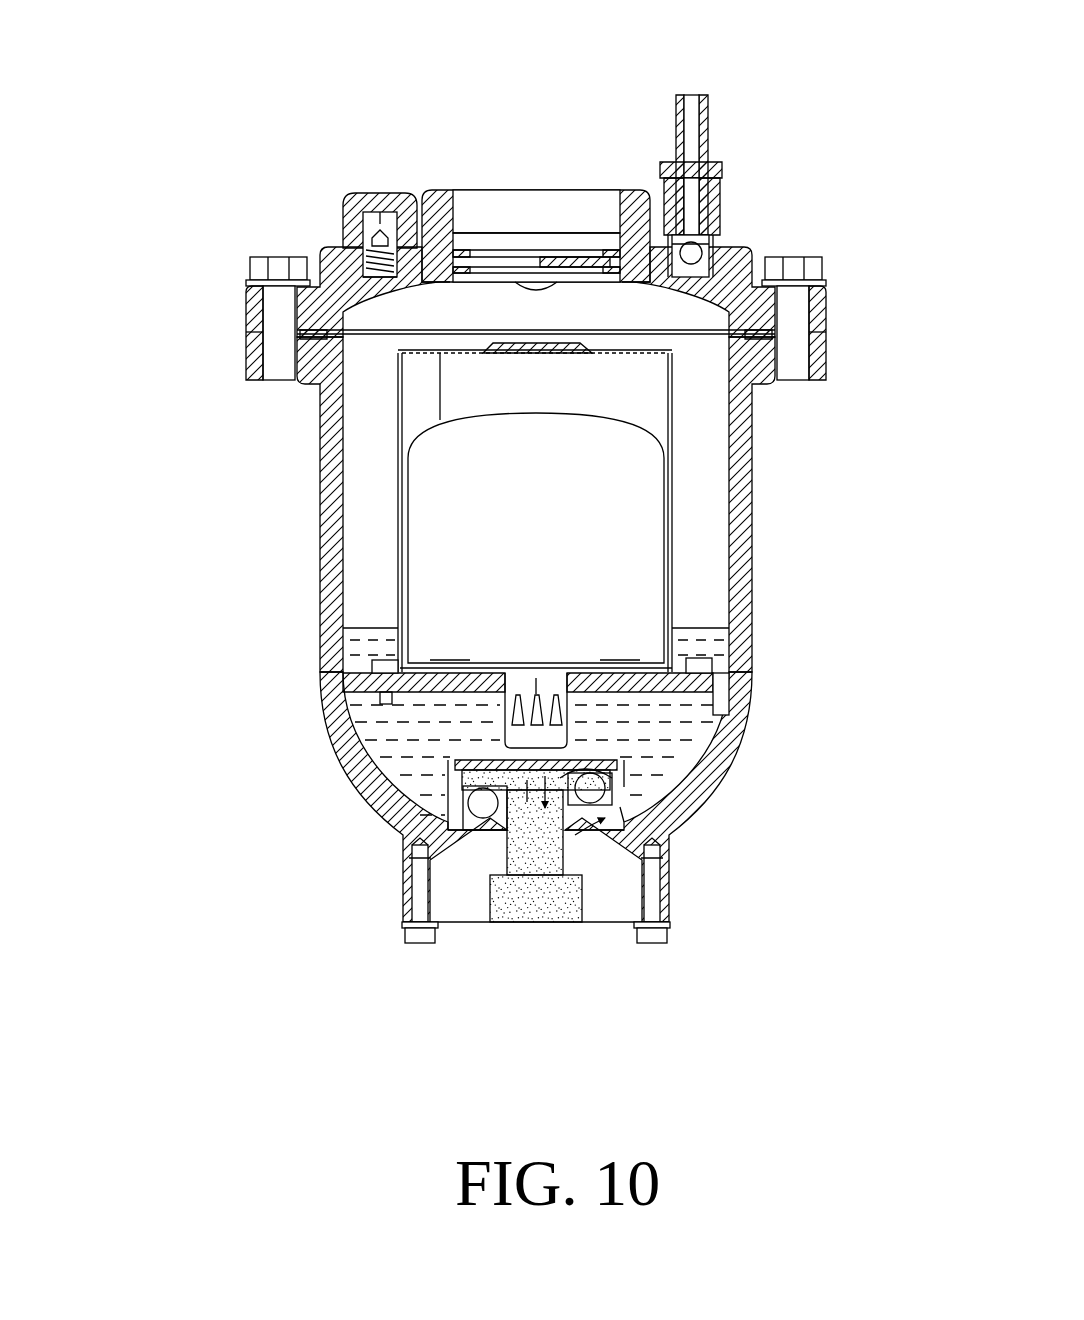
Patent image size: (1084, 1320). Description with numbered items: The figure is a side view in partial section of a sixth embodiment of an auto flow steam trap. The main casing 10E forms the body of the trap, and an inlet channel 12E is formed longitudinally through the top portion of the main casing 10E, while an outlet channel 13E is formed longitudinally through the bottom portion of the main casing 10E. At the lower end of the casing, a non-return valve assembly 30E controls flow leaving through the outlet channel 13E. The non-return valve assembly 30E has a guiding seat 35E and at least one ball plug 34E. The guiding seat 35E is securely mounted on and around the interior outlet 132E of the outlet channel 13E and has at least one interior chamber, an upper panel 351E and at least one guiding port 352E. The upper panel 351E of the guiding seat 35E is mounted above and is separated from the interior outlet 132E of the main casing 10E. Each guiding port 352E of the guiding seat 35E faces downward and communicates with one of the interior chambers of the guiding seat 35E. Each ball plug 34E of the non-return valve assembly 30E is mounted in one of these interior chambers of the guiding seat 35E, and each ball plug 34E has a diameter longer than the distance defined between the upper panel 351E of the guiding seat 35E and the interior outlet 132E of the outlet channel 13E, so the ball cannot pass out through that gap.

The main casing 10E is at (333, 494).
The inlet channel 12E is at (455, 227).
The outlet channel 13E is at (563, 872).
The non-return valve assembly 30E is at (630, 756).
The ball plug 34E is at (455, 800).
The guiding seat 35E is at (600, 800).
The interior outlet 132E is at (478, 805).
The upper panel 351E is at (455, 787).
The guiding port 352E is at (500, 817).